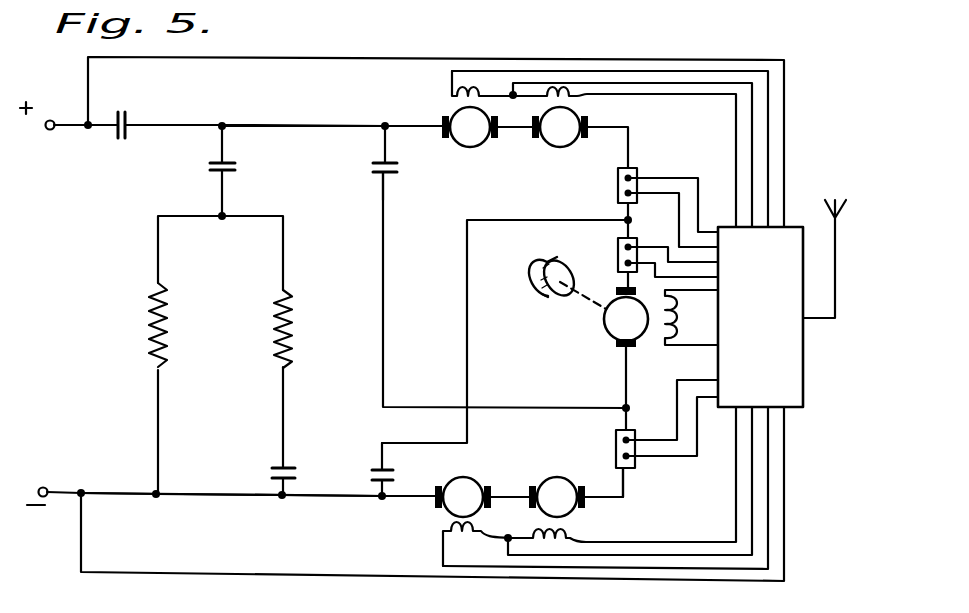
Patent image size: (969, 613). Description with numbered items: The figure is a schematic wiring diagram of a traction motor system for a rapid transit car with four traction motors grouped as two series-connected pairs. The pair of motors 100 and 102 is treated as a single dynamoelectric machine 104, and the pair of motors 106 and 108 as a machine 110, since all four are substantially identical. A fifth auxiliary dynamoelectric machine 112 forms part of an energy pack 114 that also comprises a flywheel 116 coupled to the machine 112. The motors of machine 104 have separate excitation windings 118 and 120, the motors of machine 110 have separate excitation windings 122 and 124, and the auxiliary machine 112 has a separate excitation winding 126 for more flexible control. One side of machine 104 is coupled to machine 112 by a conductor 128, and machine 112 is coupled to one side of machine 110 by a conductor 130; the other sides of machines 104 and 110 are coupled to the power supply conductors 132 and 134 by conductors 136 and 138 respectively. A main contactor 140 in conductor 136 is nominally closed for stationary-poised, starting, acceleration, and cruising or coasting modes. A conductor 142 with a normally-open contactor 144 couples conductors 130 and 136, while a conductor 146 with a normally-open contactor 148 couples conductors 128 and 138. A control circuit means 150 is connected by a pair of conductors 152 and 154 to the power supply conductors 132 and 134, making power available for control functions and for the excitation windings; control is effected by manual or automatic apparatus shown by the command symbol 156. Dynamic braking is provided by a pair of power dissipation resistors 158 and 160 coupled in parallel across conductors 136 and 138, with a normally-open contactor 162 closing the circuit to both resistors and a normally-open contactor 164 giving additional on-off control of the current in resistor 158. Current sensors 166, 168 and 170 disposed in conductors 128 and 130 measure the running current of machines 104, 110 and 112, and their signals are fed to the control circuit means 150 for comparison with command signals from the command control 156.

The motor 100 is at (454, 113).
The motor 102 is at (558, 149).
The machine 104 is at (505, 50).
The motor 106 is at (478, 478).
The motor 108 is at (561, 477).
The machine 110 is at (476, 583).
The auxiliary dynamoelectric machine 112 is at (607, 335).
The energy pack 114 is at (592, 334).
The flywheel 116 is at (540, 274).
The excitation winding 118 is at (453, 93).
The excitation winding 120 is at (580, 95).
The excitation winding 122 is at (430, 532).
The excitation winding 124 is at (580, 538).
The separate excitation winding 126 is at (665, 346).
The conductor 128 is at (616, 130).
The conductor 130 is at (625, 487).
The power supply conductor 132 is at (68, 118).
The power supply conductor 134 is at (63, 492).
The conductor 136 is at (257, 128).
The conductor 138 is at (197, 496).
The main contactor 140 is at (156, 104).
The conductor 142 is at (383, 278).
The normally-open contactor 144 is at (383, 176).
The conductor 146 is at (467, 342).
The normally-open contactor 148 is at (378, 474).
The control circuit means 150 is at (760, 317).
The conductor 152 is at (235, 58).
The conductor 154 is at (115, 572).
The command control 156 is at (842, 276).
The power dissipation resistor 158 is at (279, 355).
The power dissipation resistor 160 is at (168, 318).
The normally-open contactor 162 is at (234, 172).
The normally-open contactor 164 is at (272, 469).
The current sensor 166 is at (618, 188).
The current sensor 168 is at (614, 450).
The current sensor 170 is at (618, 255).